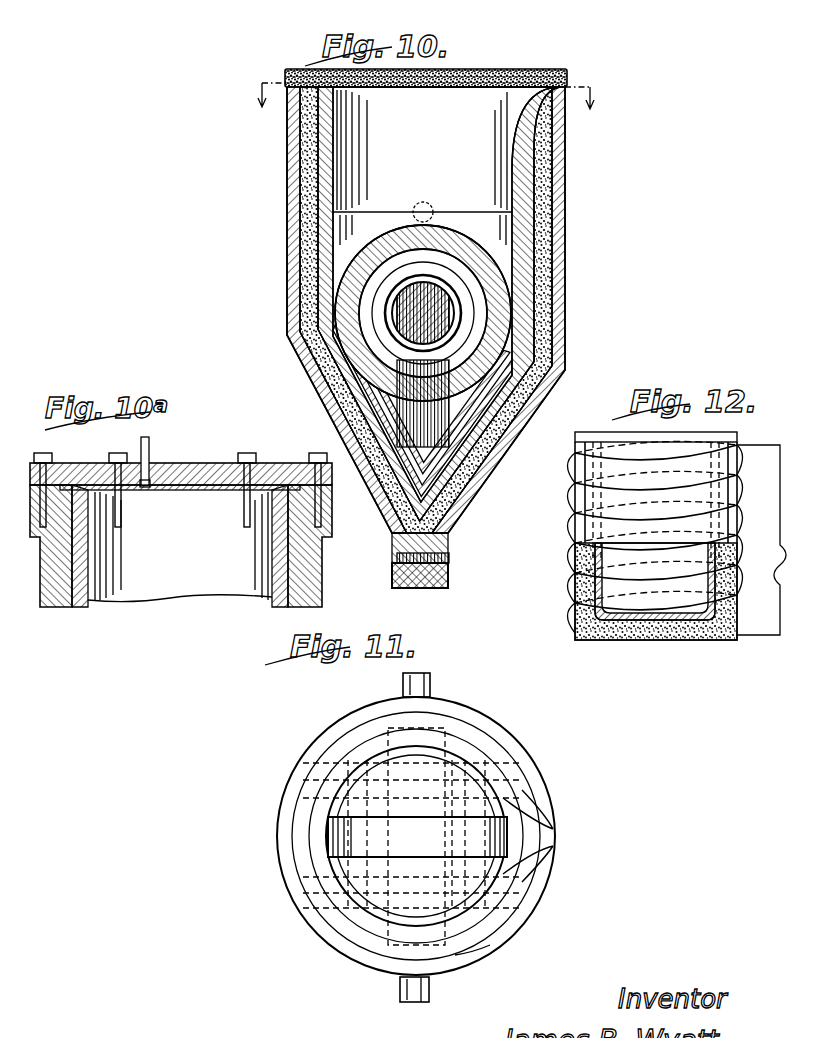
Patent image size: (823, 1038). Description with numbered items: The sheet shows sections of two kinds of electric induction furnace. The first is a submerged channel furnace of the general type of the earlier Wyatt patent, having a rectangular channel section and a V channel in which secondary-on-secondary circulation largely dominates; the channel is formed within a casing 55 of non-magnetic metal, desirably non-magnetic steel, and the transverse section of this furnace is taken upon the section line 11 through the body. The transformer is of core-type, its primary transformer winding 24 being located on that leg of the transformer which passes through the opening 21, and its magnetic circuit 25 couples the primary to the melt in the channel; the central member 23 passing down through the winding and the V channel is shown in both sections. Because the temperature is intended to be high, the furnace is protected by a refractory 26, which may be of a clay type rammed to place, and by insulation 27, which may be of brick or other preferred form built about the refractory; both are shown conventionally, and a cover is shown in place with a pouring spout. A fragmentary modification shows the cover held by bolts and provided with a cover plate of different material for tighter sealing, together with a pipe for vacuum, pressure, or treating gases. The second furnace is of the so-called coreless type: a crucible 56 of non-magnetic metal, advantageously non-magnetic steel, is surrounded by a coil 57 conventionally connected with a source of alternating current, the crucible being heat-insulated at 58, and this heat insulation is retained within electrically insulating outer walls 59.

In FIG. 10, the section line 11 is at (427, 111).
In FIG. 10, the opening 21 is at (363, 326).
In FIG. 11, the opening 21 is at (358, 895).
In FIG. 10, the tube 23 is at (427, 590).
In FIG. 10, the primary transformer winding 24 is at (462, 301).
In FIG. 11, the primary transformer winding 24 is at (405, 900).
In FIG. 10, the magnetic circuit 25 is at (450, 577).
In FIG. 11, the magnetic circuit 25 is at (476, 954).
In FIG. 10, the refractory 26 is at (296, 203).
In FIG. 11, the refractory 26 is at (460, 733).
In FIG. 10, the insulation 27 is at (325, 240).
In FIG. 11, the insulation 27 is at (500, 740).
In FIG. 10, the casing 55 is at (335, 372).
In FIG. 11, the casing 55 is at (480, 765).
In FIG. 12, the crucible 56 is at (736, 513).
In FIG. 12, the coil 57 is at (575, 530).
In FIG. 12, the heat insulation 58 is at (734, 620).
In FIG. 12, the electrically insulating outer walls 59 is at (741, 463).